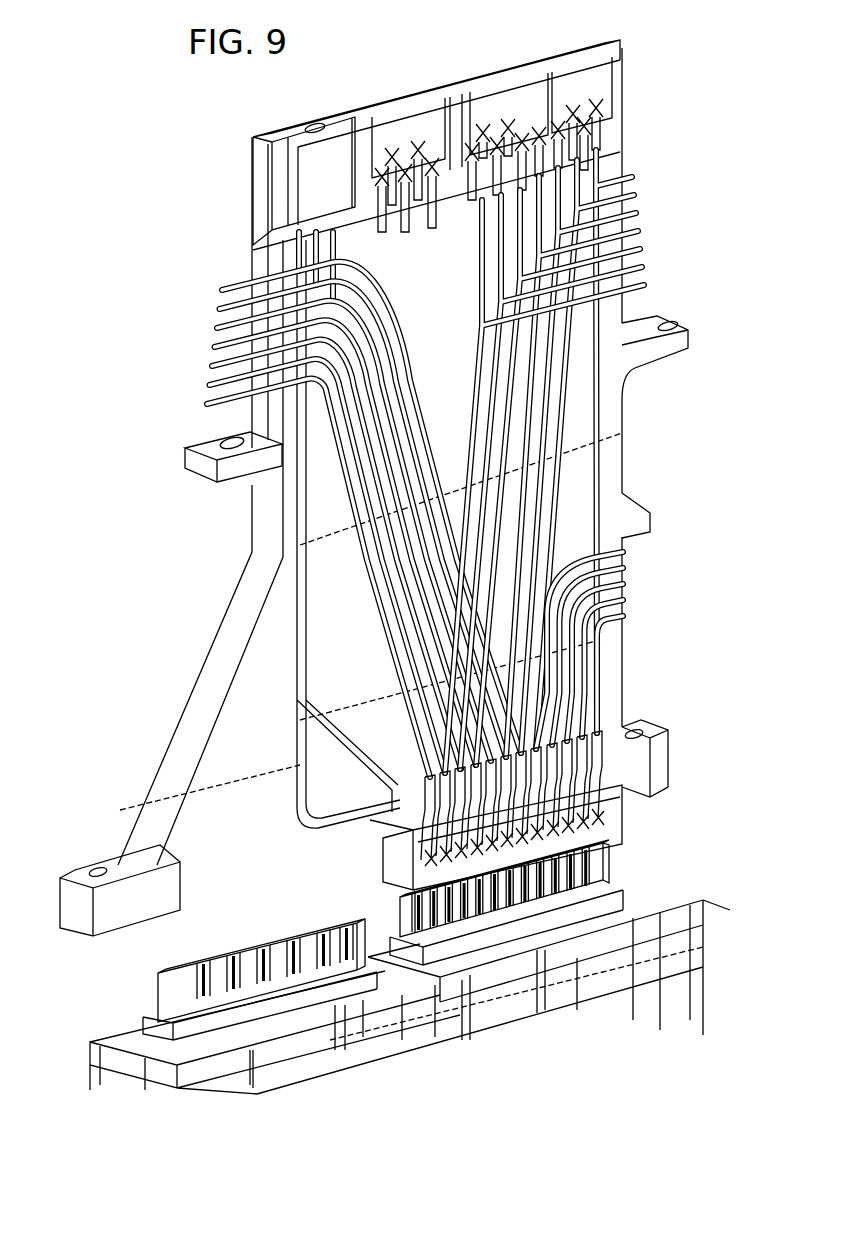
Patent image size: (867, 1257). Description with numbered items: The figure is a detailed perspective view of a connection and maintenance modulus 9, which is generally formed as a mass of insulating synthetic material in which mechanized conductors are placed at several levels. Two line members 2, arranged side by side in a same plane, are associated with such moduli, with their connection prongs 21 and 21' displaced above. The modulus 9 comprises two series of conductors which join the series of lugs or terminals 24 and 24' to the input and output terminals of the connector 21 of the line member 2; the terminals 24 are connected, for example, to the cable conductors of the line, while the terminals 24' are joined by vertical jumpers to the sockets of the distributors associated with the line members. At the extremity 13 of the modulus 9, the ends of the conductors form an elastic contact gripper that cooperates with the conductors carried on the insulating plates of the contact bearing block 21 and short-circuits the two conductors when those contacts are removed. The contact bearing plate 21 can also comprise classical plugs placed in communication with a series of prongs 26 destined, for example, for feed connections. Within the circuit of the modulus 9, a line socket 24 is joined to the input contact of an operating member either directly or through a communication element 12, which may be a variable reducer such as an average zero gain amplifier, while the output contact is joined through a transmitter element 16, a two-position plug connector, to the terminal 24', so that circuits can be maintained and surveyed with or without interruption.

The line member 2 is at (613, 963).
The connection and maintenance modulus 9 is at (224, 750).
The communication element 12 is at (296, 128).
The extremity 13 is at (616, 815).
The transmitter element 16 is at (530, 62).
The contact bearing block 21 is at (541, 895).
The connection prong 21' is at (241, 979).
The terminal 24 is at (338, 519).
The terminal 24' is at (576, 461).
The prongs 26 is at (645, 537).